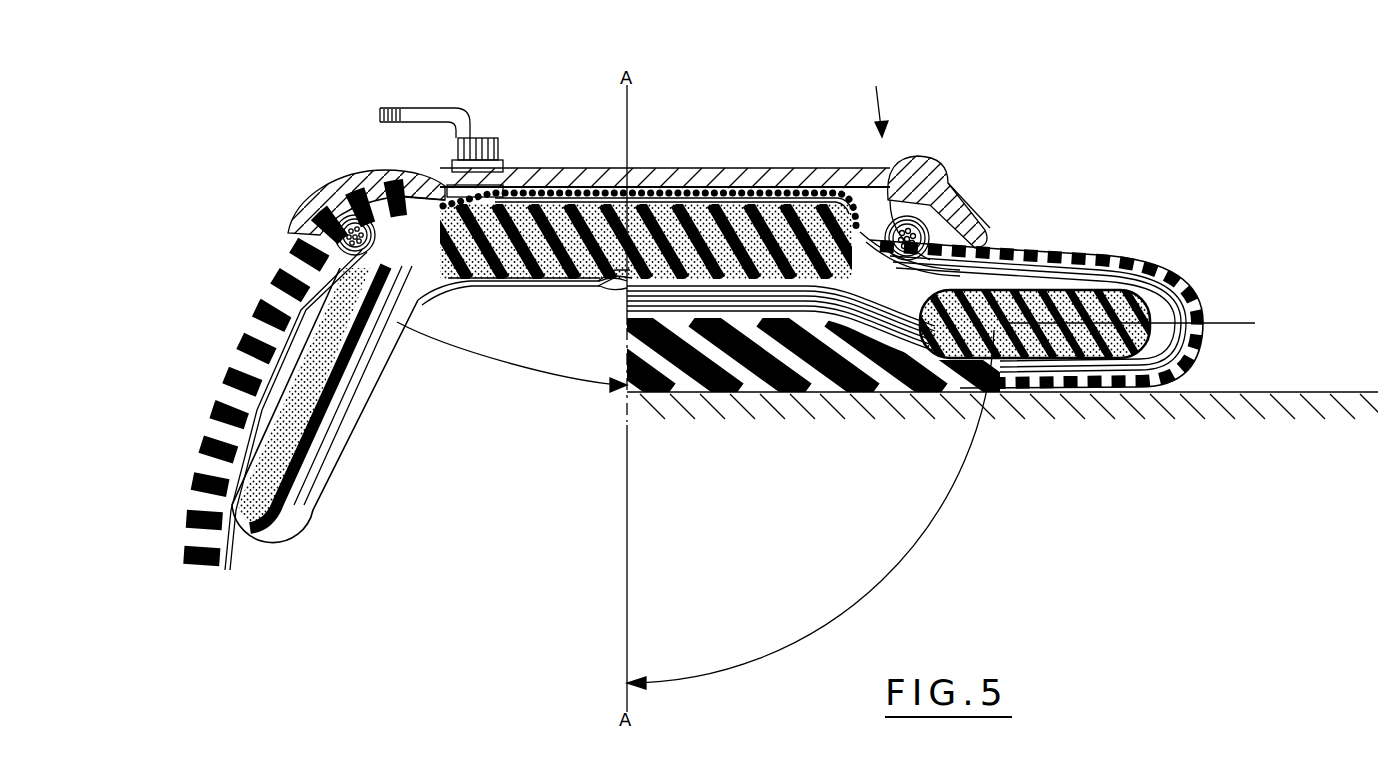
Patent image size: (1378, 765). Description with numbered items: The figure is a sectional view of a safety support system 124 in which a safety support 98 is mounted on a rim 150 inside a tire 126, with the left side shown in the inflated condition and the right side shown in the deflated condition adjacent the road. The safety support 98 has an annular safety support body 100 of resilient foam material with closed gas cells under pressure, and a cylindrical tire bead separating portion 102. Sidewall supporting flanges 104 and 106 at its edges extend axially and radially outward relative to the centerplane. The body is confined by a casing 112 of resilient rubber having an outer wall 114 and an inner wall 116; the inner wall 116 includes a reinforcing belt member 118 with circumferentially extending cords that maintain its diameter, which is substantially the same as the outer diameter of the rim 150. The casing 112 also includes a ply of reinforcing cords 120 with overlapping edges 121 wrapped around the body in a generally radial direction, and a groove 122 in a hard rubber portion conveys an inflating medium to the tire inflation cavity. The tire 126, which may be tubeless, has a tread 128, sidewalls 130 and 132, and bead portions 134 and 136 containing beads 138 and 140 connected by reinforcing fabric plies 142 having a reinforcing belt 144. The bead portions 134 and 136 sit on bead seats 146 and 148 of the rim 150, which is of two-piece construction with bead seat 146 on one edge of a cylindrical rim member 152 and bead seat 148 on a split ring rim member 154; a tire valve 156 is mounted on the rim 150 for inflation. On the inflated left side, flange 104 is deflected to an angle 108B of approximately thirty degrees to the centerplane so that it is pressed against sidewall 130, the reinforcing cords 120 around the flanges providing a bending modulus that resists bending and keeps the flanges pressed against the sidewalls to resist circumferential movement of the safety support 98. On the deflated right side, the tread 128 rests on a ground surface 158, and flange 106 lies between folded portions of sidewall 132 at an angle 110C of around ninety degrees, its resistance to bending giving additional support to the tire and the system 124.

The safety support 98 is at (572, 190).
The safety support body 100 is at (602, 213).
The cylindrical tire bead separating portion 102 is at (672, 215).
The sidewall supporting flange 104 is at (300, 467).
The sidewall supporting flange 106 is at (1150, 300).
The angle 108B is at (560, 384).
The angle 110C is at (905, 553).
The casing 112 is at (367, 393).
The outer wall 114 is at (519, 290).
The inner wall 116 is at (762, 190).
The reinforcing belt member 118 is at (803, 188).
The ply of reinforcing cords 120 is at (728, 200).
The overlapping edges 121 is at (622, 292).
The groove 122 is at (452, 185).
The safety support system 124 is at (918, 154).
The tire 126 is at (1180, 370).
The tread 128 is at (840, 383).
The sidewall 130 is at (273, 301).
The sidewall 132 is at (1200, 296).
The bead portion 134 is at (337, 232).
The bead portion 136 is at (927, 250).
The bead 138 is at (345, 228).
The bead 140 is at (922, 238).
The reinforcing fabric plies 142 is at (1200, 338).
The reinforcing belt 144 is at (733, 305).
The bead seat 146 is at (372, 202).
The bead seat 148 is at (953, 173).
The rim 150 is at (853, 170).
The cylindrical rim member 152 is at (397, 185).
The split ring rim member 154 is at (902, 182).
The tire valve 156 is at (414, 108).
The ground surface 158 is at (1255, 394).